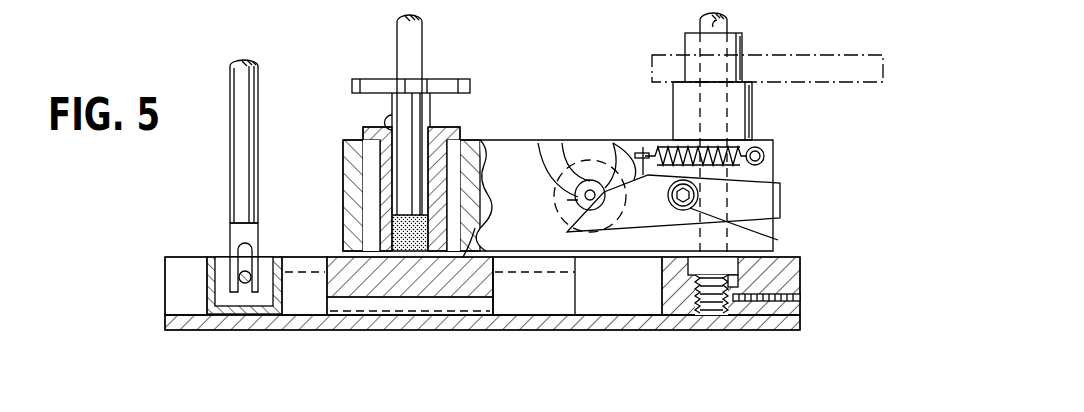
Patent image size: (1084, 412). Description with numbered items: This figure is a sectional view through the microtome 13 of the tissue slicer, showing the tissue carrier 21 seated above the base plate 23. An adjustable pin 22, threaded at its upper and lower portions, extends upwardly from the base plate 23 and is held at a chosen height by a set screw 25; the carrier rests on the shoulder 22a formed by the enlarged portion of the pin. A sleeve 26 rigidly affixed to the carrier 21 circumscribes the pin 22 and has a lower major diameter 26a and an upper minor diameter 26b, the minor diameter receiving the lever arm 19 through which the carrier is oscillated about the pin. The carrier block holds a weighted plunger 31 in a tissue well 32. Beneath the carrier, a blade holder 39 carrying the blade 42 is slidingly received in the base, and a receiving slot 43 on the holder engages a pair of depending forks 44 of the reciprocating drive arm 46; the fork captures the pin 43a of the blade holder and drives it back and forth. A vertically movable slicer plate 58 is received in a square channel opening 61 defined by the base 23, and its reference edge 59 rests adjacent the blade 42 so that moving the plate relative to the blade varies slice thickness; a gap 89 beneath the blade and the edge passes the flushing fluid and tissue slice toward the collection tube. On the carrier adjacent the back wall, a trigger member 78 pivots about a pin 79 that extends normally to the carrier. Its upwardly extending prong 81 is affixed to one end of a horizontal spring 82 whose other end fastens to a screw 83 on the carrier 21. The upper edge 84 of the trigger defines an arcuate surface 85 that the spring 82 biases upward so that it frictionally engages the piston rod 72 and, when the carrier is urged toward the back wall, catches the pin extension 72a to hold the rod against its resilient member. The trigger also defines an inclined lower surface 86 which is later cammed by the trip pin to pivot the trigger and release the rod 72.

The microtome 13 is at (346, 55).
The lever arm 19 is at (846, 58).
The tissue carrier 21 is at (506, 138).
The adjustable pin 22 is at (700, 17).
The shoulder 22a is at (682, 248).
The base plate 23 is at (165, 323).
The set screw 25 is at (800, 297).
The sleeve 26 is at (675, 75).
The lower major diameter 26a is at (742, 104).
The upper minor diameter 26b is at (743, 45).
The weighted plunger 31 is at (418, 105).
The tissue well 32 is at (390, 117).
The blade holder 39 is at (207, 287).
The blade 42 is at (322, 255).
The receiving slot 43 is at (210, 263).
The pin 43a is at (251, 280).
The depending forks 44 is at (238, 233).
The reciprocating drive arm 46 is at (250, 100).
The slicer plate 58 is at (415, 293).
The reference edge 59 is at (484, 259).
The square channel opening 61 is at (490, 320).
The piston rod 72 is at (578, 185).
The pin extension 72a is at (588, 162).
The trigger member 78 is at (781, 193).
The pin 79 is at (778, 240).
The prong 81 is at (653, 143).
The horizontal spring 82 is at (752, 146).
The screw 83 is at (764, 158).
The upper edge 84 is at (620, 163).
The arcuate surface 85 is at (548, 165).
The inclined lower surface 86 is at (783, 208).
The gap 89 is at (463, 257).